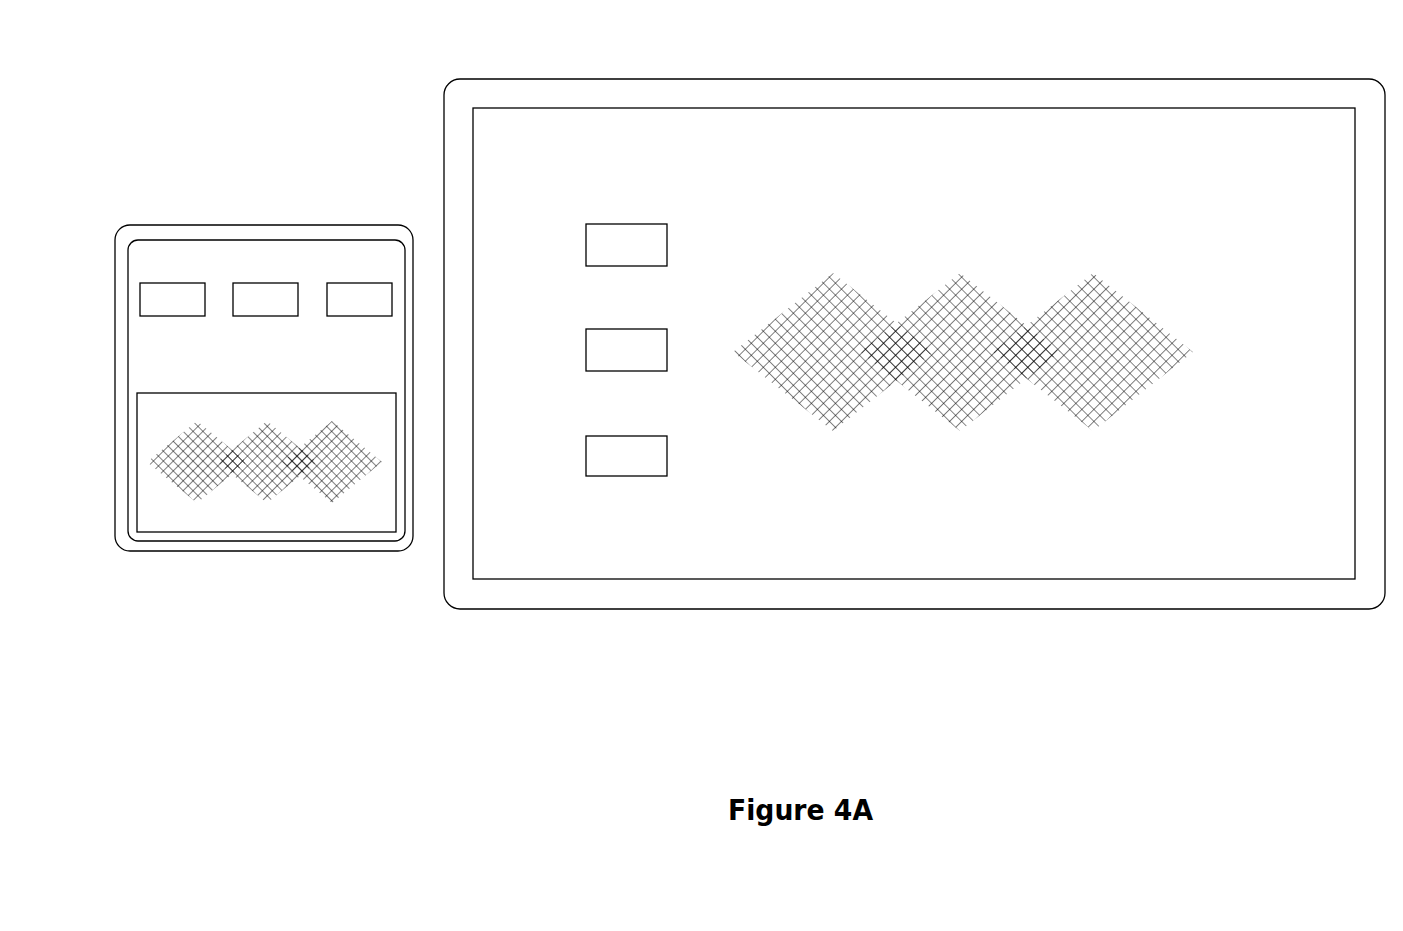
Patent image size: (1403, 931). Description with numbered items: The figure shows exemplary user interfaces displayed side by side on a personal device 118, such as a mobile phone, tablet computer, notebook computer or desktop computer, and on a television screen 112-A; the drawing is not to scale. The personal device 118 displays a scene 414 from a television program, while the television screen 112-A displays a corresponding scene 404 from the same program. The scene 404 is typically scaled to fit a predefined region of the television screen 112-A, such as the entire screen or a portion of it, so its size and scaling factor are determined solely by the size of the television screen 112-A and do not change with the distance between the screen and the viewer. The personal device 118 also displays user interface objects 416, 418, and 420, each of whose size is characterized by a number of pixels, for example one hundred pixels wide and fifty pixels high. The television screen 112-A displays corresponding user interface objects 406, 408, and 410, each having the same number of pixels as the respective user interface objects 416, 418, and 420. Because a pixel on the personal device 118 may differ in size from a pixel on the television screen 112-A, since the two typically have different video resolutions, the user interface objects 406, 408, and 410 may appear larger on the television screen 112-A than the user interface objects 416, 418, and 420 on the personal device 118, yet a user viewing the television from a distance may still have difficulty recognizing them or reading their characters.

The television screen 112-A is at (1257, 77).
The scene 404 is at (1025, 110).
The user interface object 406 is at (667, 244).
The user interface object 408 is at (667, 349).
The user interface object 410 is at (667, 463).
The personal device 118 is at (264, 226).
The scene 414 is at (147, 393).
The user interface object 416 is at (151, 283).
The user interface object 418 is at (243, 283).
The user interface object 420 is at (351, 316).